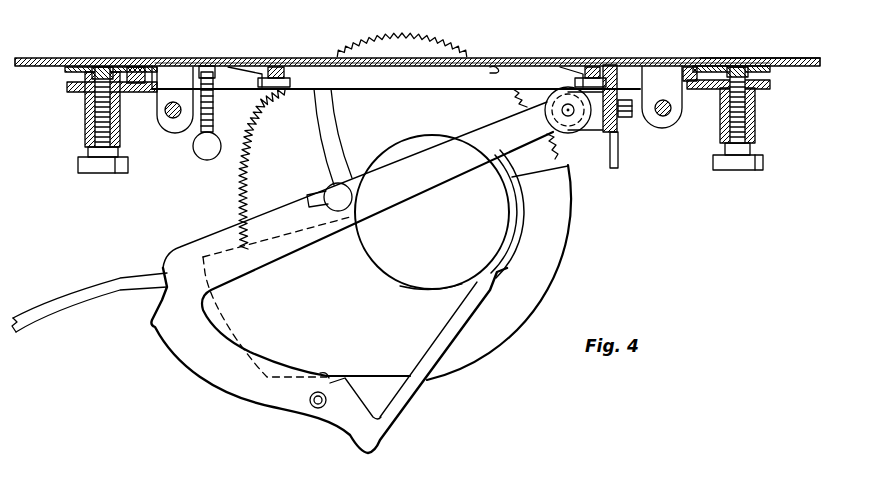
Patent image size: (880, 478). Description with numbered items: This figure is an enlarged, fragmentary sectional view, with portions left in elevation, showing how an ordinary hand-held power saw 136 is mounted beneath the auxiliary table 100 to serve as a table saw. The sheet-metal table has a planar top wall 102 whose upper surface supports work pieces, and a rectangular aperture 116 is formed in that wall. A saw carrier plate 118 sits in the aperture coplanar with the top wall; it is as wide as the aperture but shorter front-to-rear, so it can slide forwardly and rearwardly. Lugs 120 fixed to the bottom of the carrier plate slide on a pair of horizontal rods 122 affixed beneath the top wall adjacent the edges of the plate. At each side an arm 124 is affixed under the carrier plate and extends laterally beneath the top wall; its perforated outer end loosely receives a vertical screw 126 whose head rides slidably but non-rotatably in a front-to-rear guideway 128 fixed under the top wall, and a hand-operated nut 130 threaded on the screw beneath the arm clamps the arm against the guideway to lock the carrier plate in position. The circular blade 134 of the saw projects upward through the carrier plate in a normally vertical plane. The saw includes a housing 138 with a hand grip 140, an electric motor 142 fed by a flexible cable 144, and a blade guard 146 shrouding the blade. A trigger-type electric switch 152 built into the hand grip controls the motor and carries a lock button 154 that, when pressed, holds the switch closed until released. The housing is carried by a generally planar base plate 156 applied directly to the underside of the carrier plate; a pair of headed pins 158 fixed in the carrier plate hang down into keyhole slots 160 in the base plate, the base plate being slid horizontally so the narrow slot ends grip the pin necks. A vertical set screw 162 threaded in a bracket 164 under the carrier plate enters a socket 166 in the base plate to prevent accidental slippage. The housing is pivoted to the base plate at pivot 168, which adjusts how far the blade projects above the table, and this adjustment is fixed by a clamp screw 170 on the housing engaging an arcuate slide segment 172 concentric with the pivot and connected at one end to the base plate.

The auxiliary table 100 is at (57, 58).
The top wall 102 is at (783, 58).
The rectangular aperture 116 is at (145, 58).
The saw carrier plate 118 is at (320, 58).
The lugs 120 is at (173, 132).
The horizontal rods 122 is at (167, 114).
The arm 124 is at (77, 91).
The vertical screw 126 is at (92, 120).
The guideway 128 is at (72, 72).
The hand-operated nut 130 is at (80, 167).
The circular blade 134 is at (432, 40).
The power saw 136 is at (512, 345).
The housing 138 is at (413, 140).
The hand grip 140 is at (210, 377).
The electric motor 142 is at (408, 280).
The flexible cable 144 is at (43, 307).
The blade guard 146 is at (543, 283).
The trigger-type electric switch 152 is at (358, 392).
The lock button 154 is at (317, 410).
The base plate 156 is at (496, 64).
The headed pins 158 is at (270, 66).
The keyhole slots 160 is at (243, 66).
The vertical set screw 162 is at (204, 155).
The bracket 164 is at (213, 100).
The socket 166 is at (216, 78).
The pivot 168 is at (573, 114).
The clamp screw 170 is at (340, 210).
The arcuate slide segment 172 is at (323, 157).